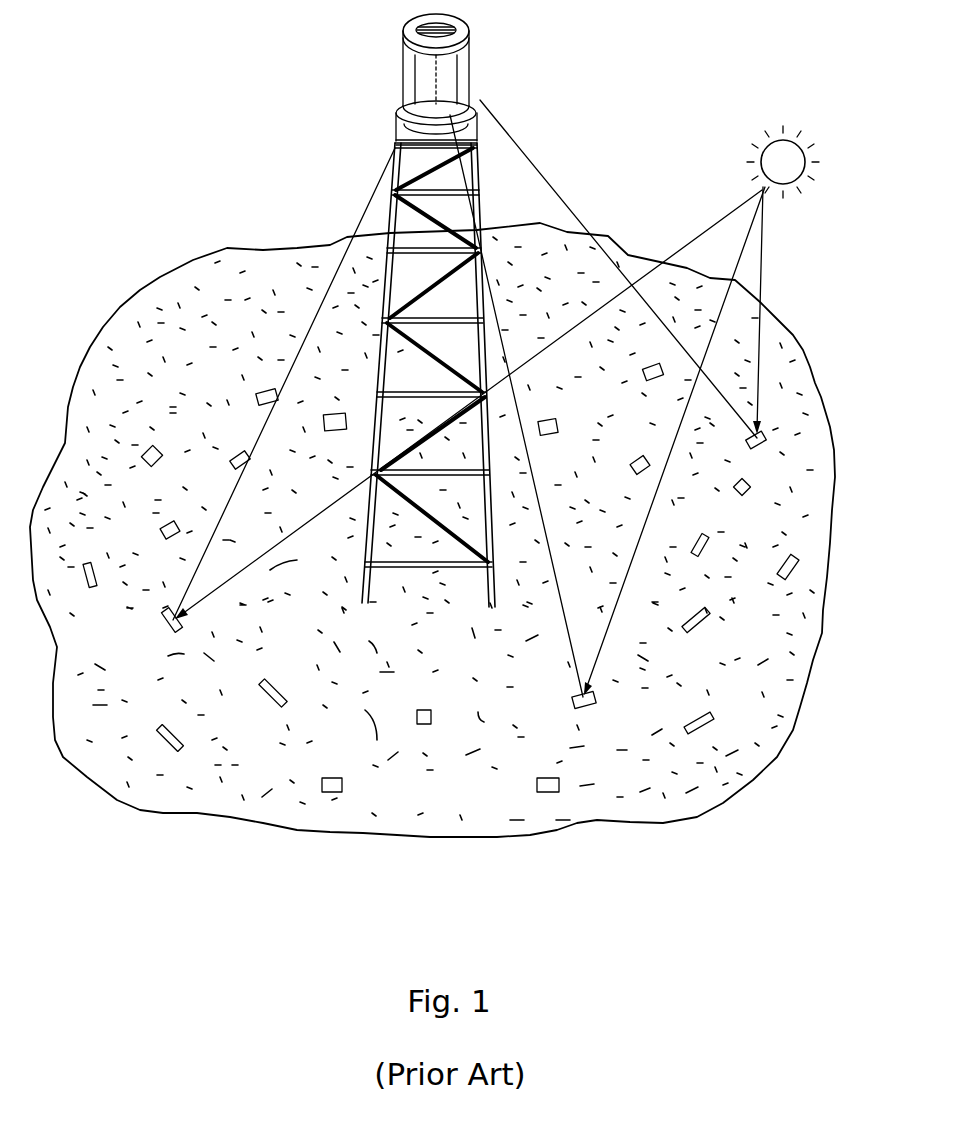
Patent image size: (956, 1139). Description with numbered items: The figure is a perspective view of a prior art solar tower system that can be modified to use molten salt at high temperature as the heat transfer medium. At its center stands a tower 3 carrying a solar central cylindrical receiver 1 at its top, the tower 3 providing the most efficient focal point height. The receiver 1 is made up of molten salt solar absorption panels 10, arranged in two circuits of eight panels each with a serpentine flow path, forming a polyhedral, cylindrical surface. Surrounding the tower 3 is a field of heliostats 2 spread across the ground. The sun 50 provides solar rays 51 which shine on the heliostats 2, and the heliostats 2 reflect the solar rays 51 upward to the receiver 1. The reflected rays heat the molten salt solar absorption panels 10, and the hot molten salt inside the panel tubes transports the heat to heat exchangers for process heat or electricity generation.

The solar central cylindrical receiver 1 is at (482, 98).
The heliostats 2 is at (766, 438).
The tower 3 is at (478, 186).
The molten salt solar absorption panels 10 is at (443, 97).
The sun 50 is at (783, 143).
The solar rays 51 is at (733, 280).